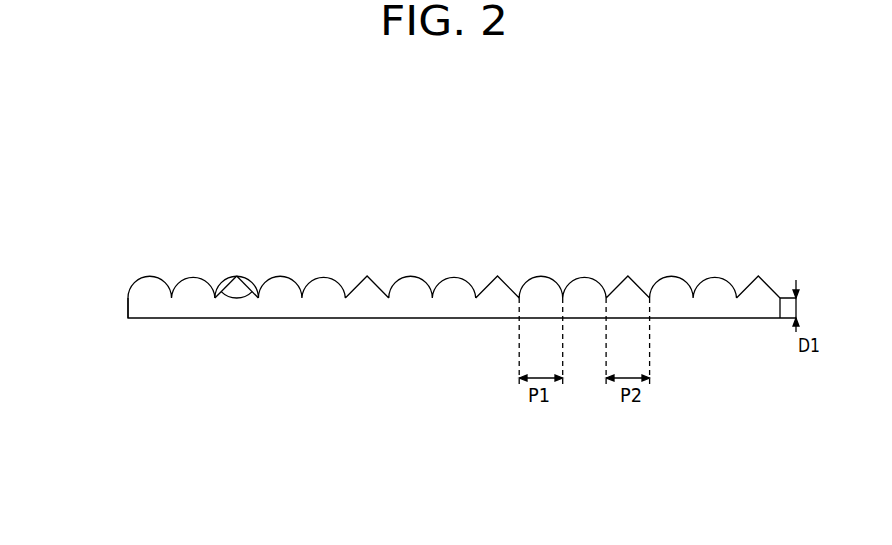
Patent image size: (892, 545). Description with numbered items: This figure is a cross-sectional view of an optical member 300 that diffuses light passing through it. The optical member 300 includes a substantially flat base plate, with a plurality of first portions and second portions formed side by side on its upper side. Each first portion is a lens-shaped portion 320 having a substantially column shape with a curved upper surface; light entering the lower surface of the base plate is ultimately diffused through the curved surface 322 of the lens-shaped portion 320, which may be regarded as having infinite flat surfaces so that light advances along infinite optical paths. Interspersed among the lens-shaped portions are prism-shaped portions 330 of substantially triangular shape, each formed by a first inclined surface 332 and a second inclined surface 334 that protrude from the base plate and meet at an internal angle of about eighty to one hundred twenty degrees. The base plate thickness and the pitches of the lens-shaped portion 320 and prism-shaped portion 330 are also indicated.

The optical member 300 is at (468, 156).
The lens-shaped portion 320 is at (152, 272).
The curved surface 322 is at (128, 290).
The prism-shaped portion 330 is at (244, 272).
The first inclined surface 332 is at (215, 298).
The second inclined surface 334 is at (258, 298).